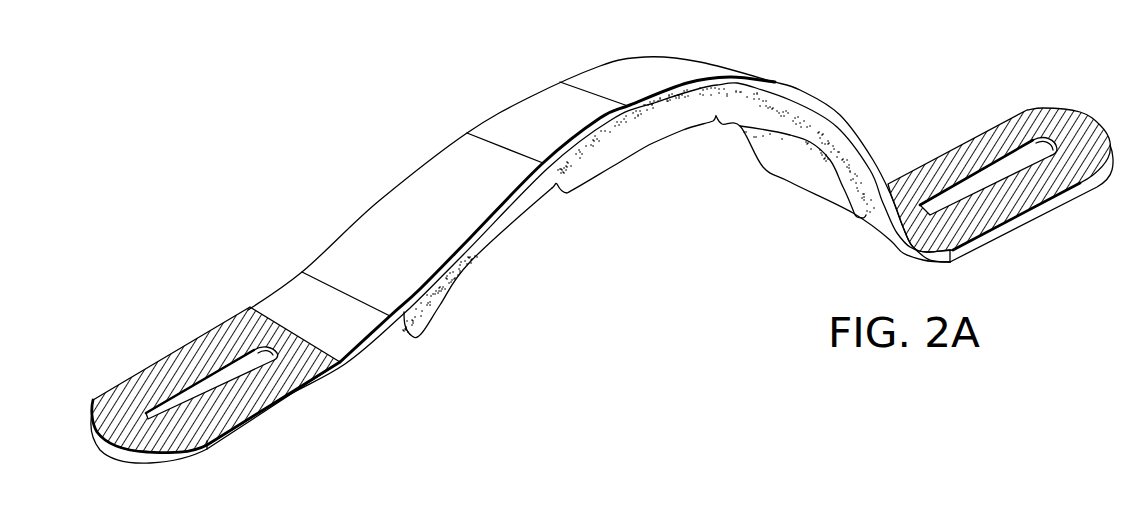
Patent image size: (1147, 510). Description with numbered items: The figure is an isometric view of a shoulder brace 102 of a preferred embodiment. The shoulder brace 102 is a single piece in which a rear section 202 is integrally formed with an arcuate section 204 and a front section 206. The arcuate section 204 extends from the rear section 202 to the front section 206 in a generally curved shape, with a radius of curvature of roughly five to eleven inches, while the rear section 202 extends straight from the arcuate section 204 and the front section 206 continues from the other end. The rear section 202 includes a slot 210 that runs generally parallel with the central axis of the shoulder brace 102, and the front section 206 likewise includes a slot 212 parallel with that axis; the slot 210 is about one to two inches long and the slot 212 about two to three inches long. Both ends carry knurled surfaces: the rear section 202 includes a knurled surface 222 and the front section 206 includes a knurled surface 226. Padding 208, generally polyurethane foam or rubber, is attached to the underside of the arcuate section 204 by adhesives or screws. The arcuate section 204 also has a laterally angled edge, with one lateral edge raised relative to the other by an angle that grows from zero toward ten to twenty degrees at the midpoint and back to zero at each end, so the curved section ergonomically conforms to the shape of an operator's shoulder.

The shoulder brace 102 is at (308, 106).
The rear section 202 is at (1030, 224).
The arcuate section 204 is at (627, 73).
The front section 206 is at (277, 400).
The padding 208 is at (490, 264).
The slot 210 is at (1045, 142).
The slot 212 is at (180, 414).
The knurled surface 222 is at (977, 140).
The knurled surface 226 is at (177, 357).